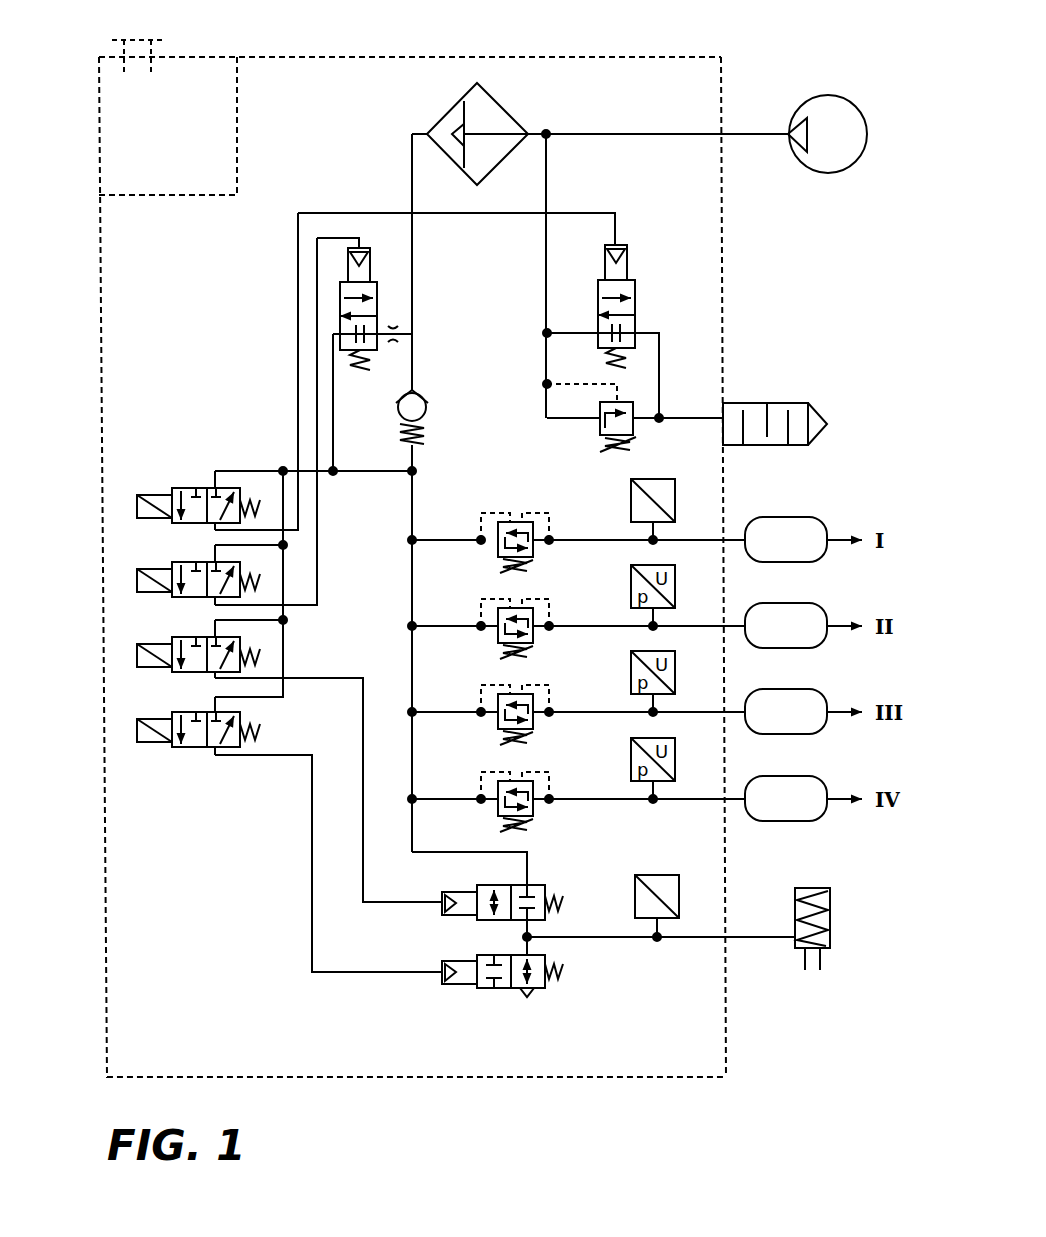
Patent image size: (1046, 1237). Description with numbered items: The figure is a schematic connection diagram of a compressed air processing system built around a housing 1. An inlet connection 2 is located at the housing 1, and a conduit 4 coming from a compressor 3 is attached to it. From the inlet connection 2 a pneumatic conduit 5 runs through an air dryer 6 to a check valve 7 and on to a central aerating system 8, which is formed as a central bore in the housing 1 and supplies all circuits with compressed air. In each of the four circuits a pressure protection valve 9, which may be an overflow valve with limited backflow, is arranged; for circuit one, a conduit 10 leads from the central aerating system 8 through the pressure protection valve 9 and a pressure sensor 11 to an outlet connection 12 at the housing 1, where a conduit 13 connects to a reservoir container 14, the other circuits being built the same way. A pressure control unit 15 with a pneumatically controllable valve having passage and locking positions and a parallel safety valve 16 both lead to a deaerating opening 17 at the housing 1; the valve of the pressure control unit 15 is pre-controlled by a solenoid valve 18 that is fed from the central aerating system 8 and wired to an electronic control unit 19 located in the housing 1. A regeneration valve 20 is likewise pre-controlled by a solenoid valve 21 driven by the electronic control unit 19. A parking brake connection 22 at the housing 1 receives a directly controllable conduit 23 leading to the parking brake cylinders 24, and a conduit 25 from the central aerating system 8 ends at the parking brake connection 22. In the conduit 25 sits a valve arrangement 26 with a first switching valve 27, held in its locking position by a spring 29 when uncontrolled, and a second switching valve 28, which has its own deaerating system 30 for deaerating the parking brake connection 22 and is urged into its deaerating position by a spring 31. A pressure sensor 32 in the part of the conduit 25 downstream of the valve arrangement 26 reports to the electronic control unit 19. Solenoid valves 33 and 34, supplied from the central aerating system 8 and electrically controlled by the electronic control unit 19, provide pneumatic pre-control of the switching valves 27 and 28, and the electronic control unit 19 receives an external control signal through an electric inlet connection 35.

The housing 1 is at (381, 55).
The inlet connection 2 is at (722, 134).
The compressor 3 is at (828, 113).
The conduit 4 is at (760, 134).
The pneumatic conduit 5 is at (612, 134).
The air dryer 6 is at (500, 97).
The check valve 7 is at (418, 400).
The central aerating system 8 is at (415, 558).
The pressure protection valve 9 is at (515, 510).
The conduit 10 is at (571, 540).
The pressure sensor 11 is at (679, 512).
The outlet connection 12 is at (724, 540).
The conduit 13 is at (727, 543).
The reservoir container 14 is at (798, 548).
The pressure control unit 15 is at (642, 307).
The safety valve 16 is at (636, 428).
The deaerating opening 17 is at (820, 422).
The solenoid valve 18 is at (134, 508).
The electronic control unit 19 is at (137, 152).
The regeneration valve 20 is at (338, 307).
The solenoid valve 21 is at (134, 580).
The parking brake connection 22 is at (727, 938).
The conduit 23 is at (750, 938).
The parking brake cylinder 24 is at (810, 888).
The conduit 25 is at (428, 852).
The valve arrangement 26 is at (460, 990).
The first switching valve 27 is at (536, 876).
The second switching valve 28 is at (488, 990).
The spring 29 is at (565, 903).
The deaerating system 30 is at (528, 997).
The spring 31 is at (560, 972).
The pressure sensor 32 is at (683, 891).
The solenoid valve 33 is at (134, 665).
The solenoid valve 34 is at (134, 738).
The electric inlet connection 35 is at (143, 40).